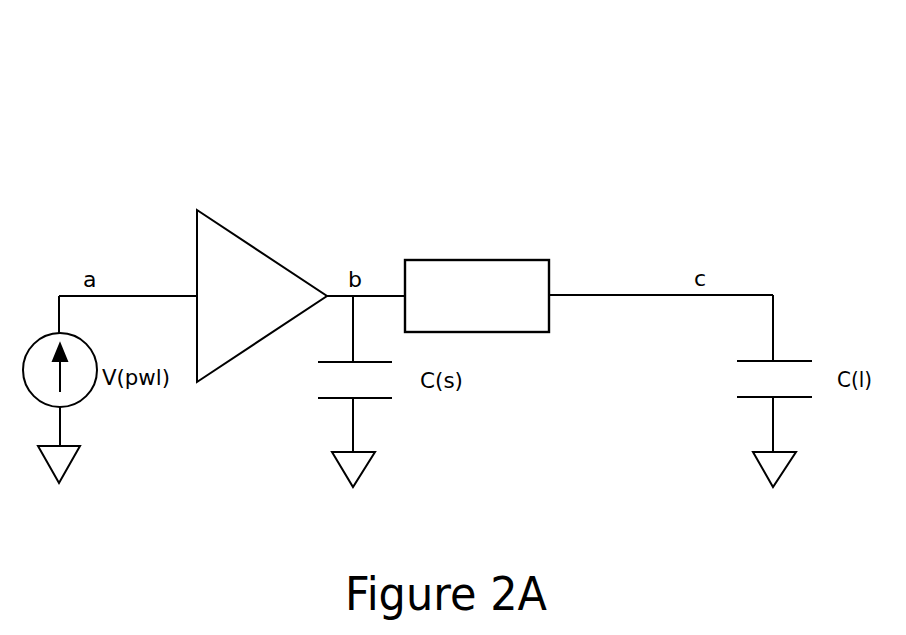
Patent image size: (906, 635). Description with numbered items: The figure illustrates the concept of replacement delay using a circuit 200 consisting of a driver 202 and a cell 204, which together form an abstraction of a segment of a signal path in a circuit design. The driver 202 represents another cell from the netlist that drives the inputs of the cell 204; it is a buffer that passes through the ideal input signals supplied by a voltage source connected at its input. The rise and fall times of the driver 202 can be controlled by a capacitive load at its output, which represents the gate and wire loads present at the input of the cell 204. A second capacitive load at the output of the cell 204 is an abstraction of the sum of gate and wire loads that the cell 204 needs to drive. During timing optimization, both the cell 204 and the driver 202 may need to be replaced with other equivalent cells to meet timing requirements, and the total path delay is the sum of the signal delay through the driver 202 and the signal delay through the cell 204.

The circuit model 200 is at (724, 116).
The driver 202 is at (258, 250).
The cell 204 is at (533, 260).